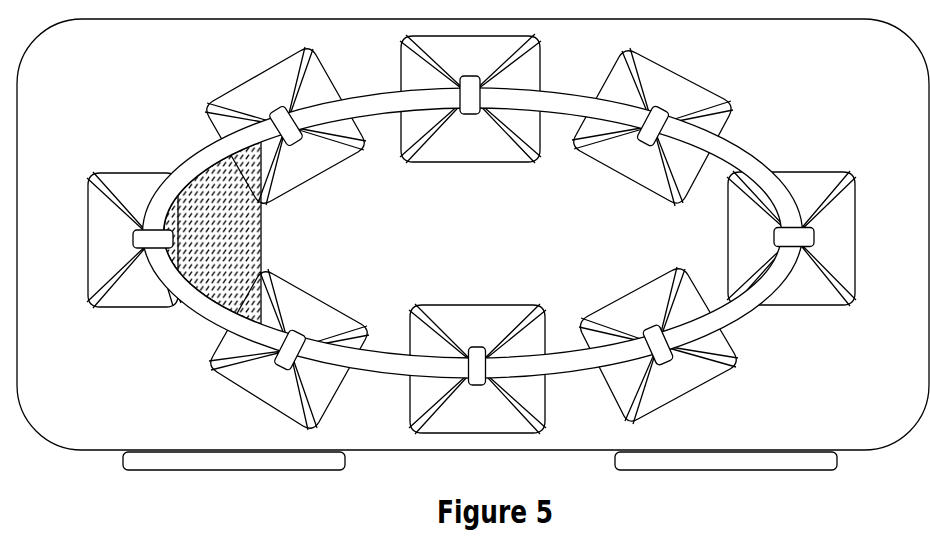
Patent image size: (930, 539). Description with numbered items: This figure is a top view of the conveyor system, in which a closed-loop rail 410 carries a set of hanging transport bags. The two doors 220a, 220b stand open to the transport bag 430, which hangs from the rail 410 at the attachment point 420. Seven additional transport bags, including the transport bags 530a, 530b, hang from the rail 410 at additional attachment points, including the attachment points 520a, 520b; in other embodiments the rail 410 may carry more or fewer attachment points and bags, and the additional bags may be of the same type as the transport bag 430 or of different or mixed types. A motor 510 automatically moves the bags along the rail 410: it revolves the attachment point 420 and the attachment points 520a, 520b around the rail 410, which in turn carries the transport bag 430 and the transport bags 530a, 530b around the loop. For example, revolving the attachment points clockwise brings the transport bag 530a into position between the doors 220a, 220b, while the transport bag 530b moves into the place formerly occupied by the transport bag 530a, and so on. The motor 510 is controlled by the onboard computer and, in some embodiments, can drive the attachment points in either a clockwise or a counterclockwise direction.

The rail 410 is at (750, 160).
The attachment point 420 is at (477, 385).
The transport bag 430 is at (463, 313).
The motor 510 is at (250, 248).
The attachment point 520a is at (643, 332).
The attachment point 520b is at (817, 232).
The transport bag 530a is at (698, 388).
The transport bag 530b is at (788, 305).
The door 220a is at (203, 470).
The door 220b is at (708, 470).